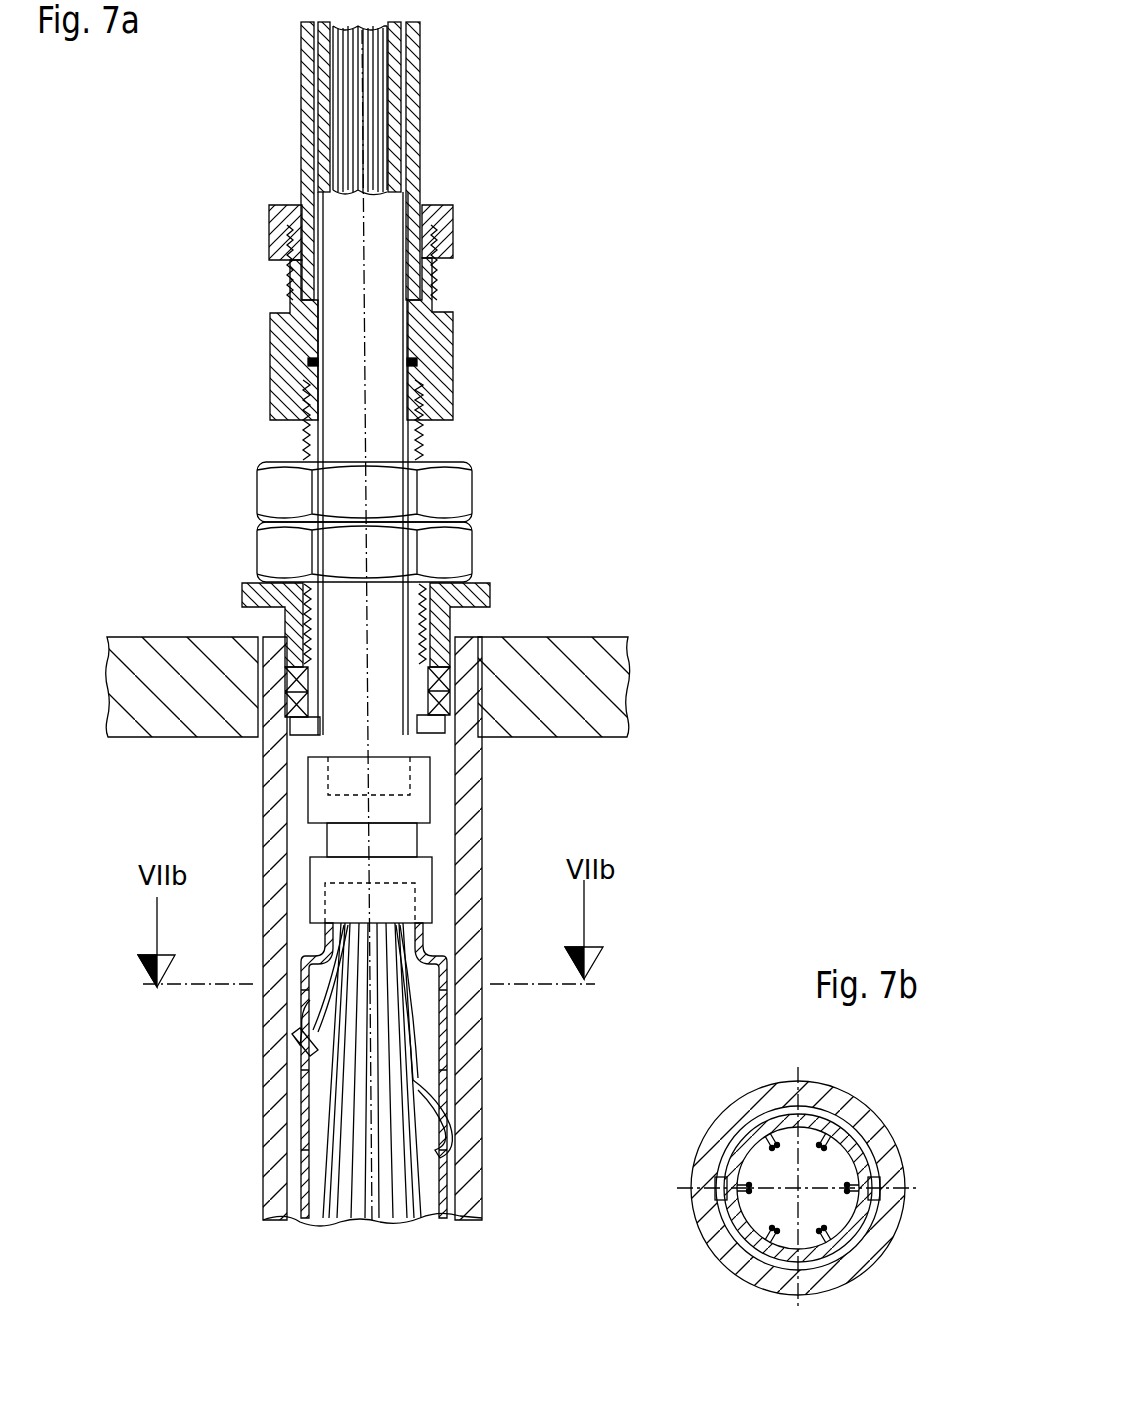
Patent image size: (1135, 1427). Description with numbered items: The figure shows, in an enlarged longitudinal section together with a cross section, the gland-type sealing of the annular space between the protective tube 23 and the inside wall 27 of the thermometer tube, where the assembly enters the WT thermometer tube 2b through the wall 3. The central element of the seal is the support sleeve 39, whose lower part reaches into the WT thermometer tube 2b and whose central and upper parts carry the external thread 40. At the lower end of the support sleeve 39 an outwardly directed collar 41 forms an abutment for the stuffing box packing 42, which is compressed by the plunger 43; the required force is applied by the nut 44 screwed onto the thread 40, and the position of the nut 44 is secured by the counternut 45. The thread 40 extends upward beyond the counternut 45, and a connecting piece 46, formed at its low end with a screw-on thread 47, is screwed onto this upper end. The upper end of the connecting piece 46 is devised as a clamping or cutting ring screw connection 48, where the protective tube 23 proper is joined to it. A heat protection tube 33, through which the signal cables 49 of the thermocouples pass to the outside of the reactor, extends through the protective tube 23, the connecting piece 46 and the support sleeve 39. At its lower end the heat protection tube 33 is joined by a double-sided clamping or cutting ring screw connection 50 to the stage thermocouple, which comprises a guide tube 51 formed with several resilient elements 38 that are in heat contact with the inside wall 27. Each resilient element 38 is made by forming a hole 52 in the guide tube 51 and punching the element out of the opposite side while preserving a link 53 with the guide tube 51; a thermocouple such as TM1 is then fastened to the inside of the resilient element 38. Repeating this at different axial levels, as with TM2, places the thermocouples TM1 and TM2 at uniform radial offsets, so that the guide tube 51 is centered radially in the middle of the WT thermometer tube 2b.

In FIG. 7A, the WT thermometer tube 2b is at (396, 931).
In FIG. 7B, the WT thermometer tube 2b is at (727, 1122).
In FIG. 7A, the wall 3 is at (615, 688).
In FIG. 7A, the protective tube 23 is at (412, 122).
In FIG. 7A, the inside wall of the thermometer tube 27 is at (290, 838).
In FIG. 7A, the heat protection tube 33 is at (395, 95).
In FIG. 7A, the resilient element 38 is at (455, 1108).
In FIG. 7B, the resilient element 38 is at (715, 1188).
In FIG. 7A, the support sleeve 39 is at (431, 784).
In FIG. 7A, the external thread 40 is at (428, 432).
In FIG. 7A, the outwardly directed collar 41 is at (431, 733).
In FIG. 7A, the stuffing box packing 42 is at (285, 705).
In FIG. 7A, the plunger 43 is at (473, 596).
In FIG. 7A, the nut 44 is at (468, 545).
In FIG. 7A, the counternut 45 is at (468, 490).
In FIG. 7A, the connecting piece 46 is at (456, 323).
In FIG. 7A, the screw-on thread 47 is at (418, 386).
In FIG. 7A, the clamping or cutting ring screw connection 48 is at (453, 210).
In FIG. 7A, the signal cables 49 is at (378, 55).
In FIG. 7A, the double-sided clamping or cutting ring screw connection 50 is at (405, 832).
In FIG. 7A, the guide tube 51 is at (297, 1130).
In FIG. 7B, the guide tube 51 is at (783, 1113).
In FIG. 7A, the hole 52 is at (444, 1020).
In FIG. 7A, the link 53 is at (302, 992).
In FIG. 7A, the thermocouple TM1 is at (300, 1030).
In FIG. 7B, the thermocouple TM1 is at (737, 1217).
In FIG. 7A, the thermocouple TM2 is at (414, 1052).
In FIG. 7B, the thermocouple TM2 is at (850, 1183).